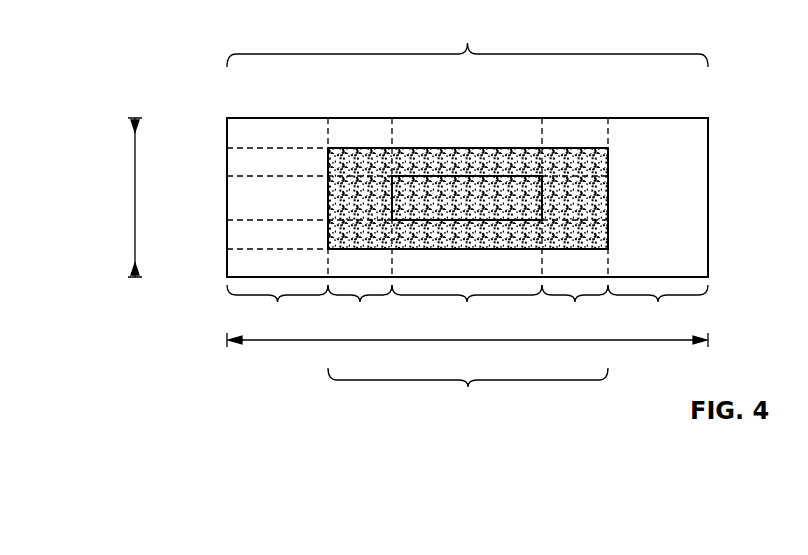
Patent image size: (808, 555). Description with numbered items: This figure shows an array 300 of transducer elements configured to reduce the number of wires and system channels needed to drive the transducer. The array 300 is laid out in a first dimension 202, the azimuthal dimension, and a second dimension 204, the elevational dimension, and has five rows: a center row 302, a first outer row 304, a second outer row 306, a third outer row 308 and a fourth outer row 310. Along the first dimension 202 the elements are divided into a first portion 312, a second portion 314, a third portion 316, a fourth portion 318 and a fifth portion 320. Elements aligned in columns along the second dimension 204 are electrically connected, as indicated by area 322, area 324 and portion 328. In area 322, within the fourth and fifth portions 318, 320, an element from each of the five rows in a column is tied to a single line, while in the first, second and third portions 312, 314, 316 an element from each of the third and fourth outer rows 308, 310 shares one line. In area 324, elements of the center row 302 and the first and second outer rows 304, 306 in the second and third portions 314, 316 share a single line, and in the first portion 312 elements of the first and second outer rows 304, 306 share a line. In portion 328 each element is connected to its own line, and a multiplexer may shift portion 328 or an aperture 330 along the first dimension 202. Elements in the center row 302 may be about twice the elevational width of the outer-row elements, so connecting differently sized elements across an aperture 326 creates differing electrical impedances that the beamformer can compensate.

The array 300 is at (581, 113).
The first dimension 202 is at (468, 342).
The second dimension 204 is at (135, 196).
The center row 302 is at (227, 197).
The first outer row 304 is at (227, 162).
The second outer row 306 is at (227, 233).
The third outer row 308 is at (227, 132).
The fourth outer row 310 is at (227, 262).
The first portion 312 is at (467, 308).
The second portion 314 is at (360, 308).
The third portion 316 is at (575, 308).
The fourth portion 318 is at (277, 308).
The fifth portion 320 is at (658, 308).
The area 322 is at (242, 267).
The area 324 is at (362, 160).
The aperture 326 is at (467, 42).
The portion 328 is at (463, 190).
The aperture 330 is at (468, 395).